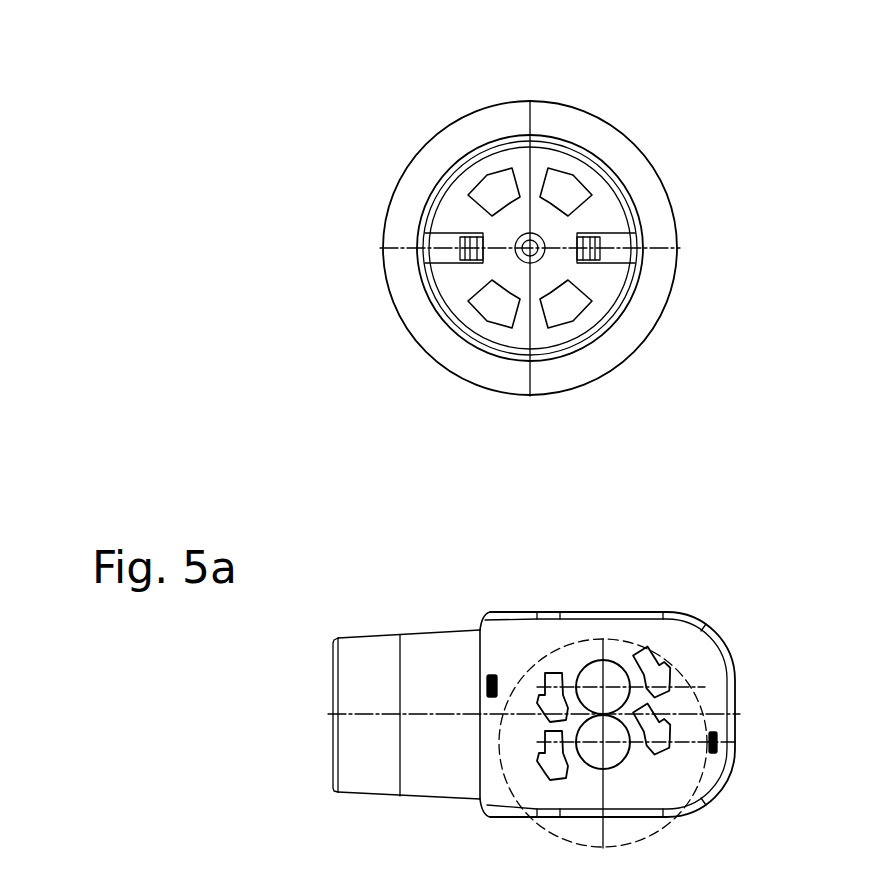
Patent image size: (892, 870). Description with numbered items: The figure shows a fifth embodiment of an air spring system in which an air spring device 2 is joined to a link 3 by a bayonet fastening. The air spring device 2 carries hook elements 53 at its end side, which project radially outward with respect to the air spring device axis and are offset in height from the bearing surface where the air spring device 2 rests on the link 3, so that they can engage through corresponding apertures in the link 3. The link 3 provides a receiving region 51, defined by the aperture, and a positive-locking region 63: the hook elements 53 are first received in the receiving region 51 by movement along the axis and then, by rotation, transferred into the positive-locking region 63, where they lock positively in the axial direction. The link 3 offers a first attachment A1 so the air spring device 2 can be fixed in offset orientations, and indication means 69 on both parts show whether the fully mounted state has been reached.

The air spring device 2 is at (435, 205).
The link 3 is at (423, 757).
The receiving region 51 is at (658, 650).
The hook elements 53 is at (458, 238).
The positive-locking region 63 is at (667, 733).
The indication means 69 is at (487, 677).
The first attachment A1 is at (660, 828).